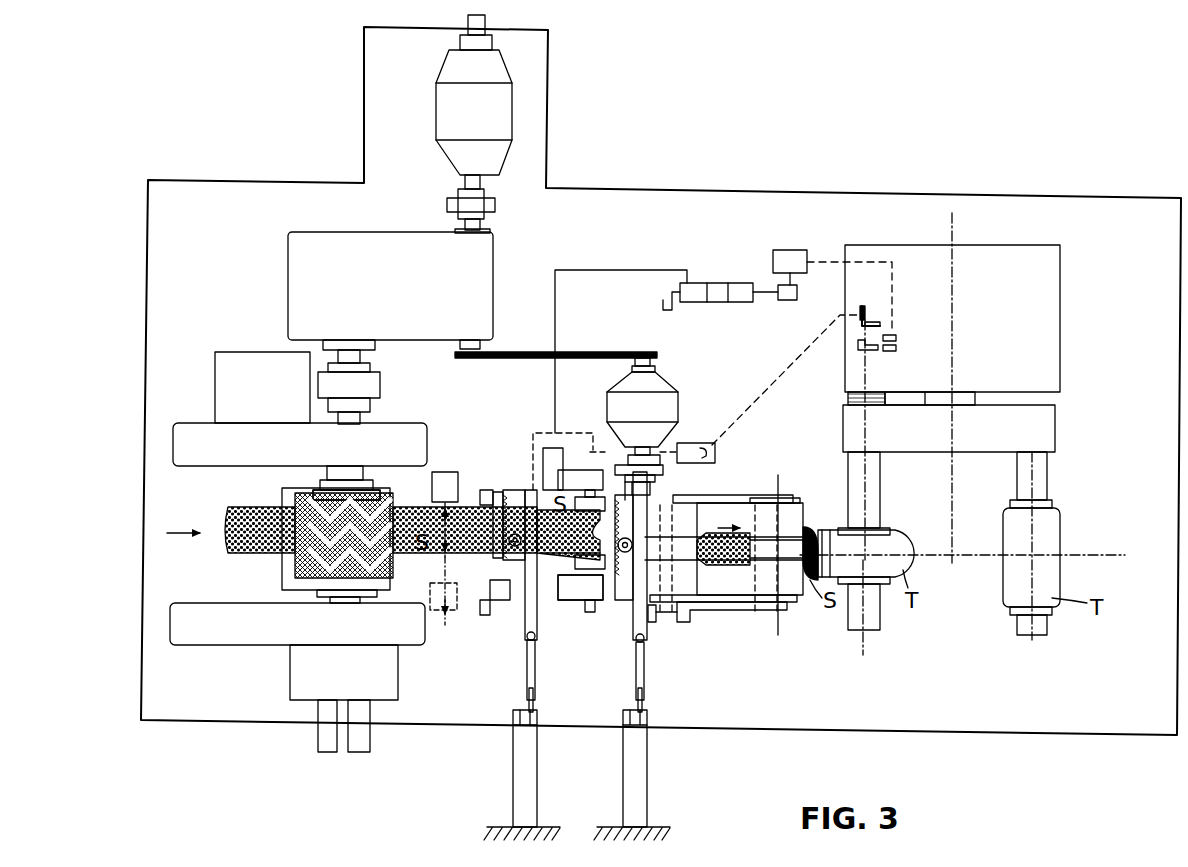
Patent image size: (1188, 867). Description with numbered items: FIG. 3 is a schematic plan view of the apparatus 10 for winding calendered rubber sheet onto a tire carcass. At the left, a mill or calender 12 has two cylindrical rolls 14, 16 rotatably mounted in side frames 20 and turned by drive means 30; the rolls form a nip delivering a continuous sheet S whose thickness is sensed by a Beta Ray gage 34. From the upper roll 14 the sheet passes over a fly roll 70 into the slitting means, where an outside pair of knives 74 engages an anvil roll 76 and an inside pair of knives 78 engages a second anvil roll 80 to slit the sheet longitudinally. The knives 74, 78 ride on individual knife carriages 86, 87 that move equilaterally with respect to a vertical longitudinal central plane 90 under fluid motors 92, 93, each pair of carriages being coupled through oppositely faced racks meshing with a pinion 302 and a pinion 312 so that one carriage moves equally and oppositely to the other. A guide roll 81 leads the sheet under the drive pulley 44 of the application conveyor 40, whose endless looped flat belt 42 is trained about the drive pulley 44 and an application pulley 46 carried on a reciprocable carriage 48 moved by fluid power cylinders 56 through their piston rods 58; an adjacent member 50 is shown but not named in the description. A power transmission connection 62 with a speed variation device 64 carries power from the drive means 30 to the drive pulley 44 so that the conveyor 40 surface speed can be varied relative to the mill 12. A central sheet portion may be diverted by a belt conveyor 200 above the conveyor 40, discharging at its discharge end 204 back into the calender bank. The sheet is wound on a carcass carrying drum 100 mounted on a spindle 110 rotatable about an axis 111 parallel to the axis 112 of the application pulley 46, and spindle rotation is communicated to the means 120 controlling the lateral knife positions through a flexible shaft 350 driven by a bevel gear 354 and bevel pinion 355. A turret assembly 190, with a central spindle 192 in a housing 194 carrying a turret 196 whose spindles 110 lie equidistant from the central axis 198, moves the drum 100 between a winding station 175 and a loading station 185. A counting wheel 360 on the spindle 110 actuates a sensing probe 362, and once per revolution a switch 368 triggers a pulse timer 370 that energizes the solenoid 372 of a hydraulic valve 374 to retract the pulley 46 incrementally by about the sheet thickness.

The apparatus 10 is at (626, 218).
The mill or calender 12 is at (168, 442).
The upper calender roll 14 is at (330, 494).
The lower calender roll 16 is at (282, 490).
The side frames 20 is at (411, 436).
The drive means 30 is at (428, 230).
The Beta Ray gage 34 is at (446, 472).
The application conveyor 40 is at (718, 500).
The endless looped flat belt 42 is at (746, 505).
The drive pulley 44 is at (694, 602).
The application pulley 46 is at (790, 510).
The carriage 48 is at (751, 606).
The extruded product 50 is at (712, 592).
The fluid power cylinders 56 is at (586, 471).
The piston rods 58 is at (663, 620).
The power transmission connection 62 is at (564, 351).
The speed variation device 64 is at (613, 403).
The fly roll 70 is at (403, 584).
The outside pair of knives 74 is at (465, 530).
The anvil roll 76 is at (485, 500).
The inside pair of knives 78 is at (568, 535).
The second anvil roll 80 is at (591, 622).
The guide roll 81 is at (626, 472).
The knife carriages 86 is at (526, 600).
The knife carriages 87 is at (622, 618).
The vertical longitudinal central plane 90 is at (976, 557).
The fluid motor 92 is at (518, 797).
The fluid motor 93 is at (637, 800).
The carcass carrying drum 100 is at (882, 527).
The spindle 110 is at (870, 488).
The axis 111 is at (872, 628).
The axis 112 is at (775, 621).
The means for controlling lateral knife positions 120 is at (691, 443).
The station 175 is at (870, 637).
The second station 185 is at (1036, 641).
The turret assembly 190 is at (1068, 338).
The central spindle 192 is at (983, 399).
The housing 194 is at (1057, 291).
The turret 196 is at (1045, 446).
The central axis 198 is at (955, 232).
The belt conveyor 200 is at (291, 570).
The discharge end 204 is at (295, 508).
The pinion 302 is at (515, 520).
The pinion 312 is at (632, 543).
The flexible shaft 350 is at (793, 357).
The bevel gear 354 is at (866, 312).
The bevel pinion 355 is at (880, 324).
The counting wheel 360 is at (872, 352).
The sensing probe 362 is at (897, 349).
The switch 368 is at (897, 338).
The pulse timer 370 is at (790, 250).
The solenoid 372 is at (788, 300).
The hydraulic valve 374 is at (714, 283).